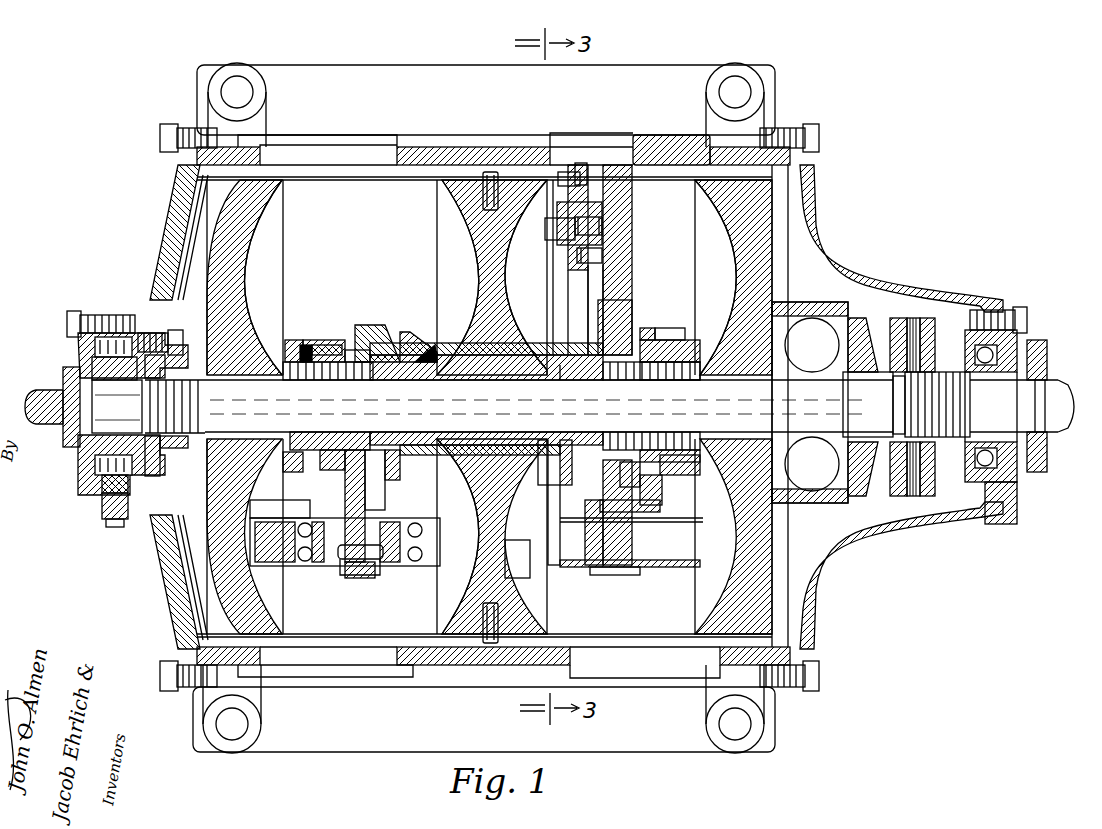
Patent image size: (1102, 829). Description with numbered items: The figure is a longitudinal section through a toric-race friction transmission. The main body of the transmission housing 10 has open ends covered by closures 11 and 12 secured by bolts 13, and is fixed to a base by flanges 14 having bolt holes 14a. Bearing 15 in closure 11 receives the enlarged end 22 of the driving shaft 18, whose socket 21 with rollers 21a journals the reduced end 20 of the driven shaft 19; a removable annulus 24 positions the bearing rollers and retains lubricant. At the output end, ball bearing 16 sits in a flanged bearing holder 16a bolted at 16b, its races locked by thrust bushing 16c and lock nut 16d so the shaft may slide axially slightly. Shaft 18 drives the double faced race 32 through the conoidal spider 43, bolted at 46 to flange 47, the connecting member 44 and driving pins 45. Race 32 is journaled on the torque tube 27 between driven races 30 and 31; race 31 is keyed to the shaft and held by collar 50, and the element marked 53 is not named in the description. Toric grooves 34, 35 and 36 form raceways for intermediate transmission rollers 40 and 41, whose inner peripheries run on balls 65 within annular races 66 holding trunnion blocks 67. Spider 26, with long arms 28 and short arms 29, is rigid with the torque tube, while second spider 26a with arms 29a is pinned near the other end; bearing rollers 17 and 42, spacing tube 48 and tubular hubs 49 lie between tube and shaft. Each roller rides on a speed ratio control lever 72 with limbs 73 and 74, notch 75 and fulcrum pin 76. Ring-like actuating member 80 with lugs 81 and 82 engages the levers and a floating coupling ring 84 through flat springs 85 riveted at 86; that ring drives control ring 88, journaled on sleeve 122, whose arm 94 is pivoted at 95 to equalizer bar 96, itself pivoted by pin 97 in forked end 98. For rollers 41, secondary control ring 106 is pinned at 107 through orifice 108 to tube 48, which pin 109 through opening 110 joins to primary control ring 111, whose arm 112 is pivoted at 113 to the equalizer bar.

The main body of transmission housing 10 is at (466, 147).
The closure 11 is at (162, 232).
The closure 12 is at (868, 278).
The bolts 13 is at (162, 151).
The flanges 14 is at (384, 77).
The bolt holes 14a is at (243, 92).
The bearing 15 is at (110, 345).
The bearing 16 is at (1012, 352).
The flanged bearing holder 16a is at (1020, 492).
The bolt 16b is at (1000, 314).
The thrust bushing 16c is at (1020, 366).
The lock nut 16d is at (1045, 455).
The bearing rollers 17 is at (618, 381).
The driving shaft 18 is at (50, 388).
The driven shaft 19 is at (1060, 426).
The reduced end 20 is at (105, 438).
The socket 21 is at (66, 445).
The rollers 21a is at (105, 372).
The enlarged end 22 is at (103, 480).
The removable annulus 24 is at (104, 504).
The transverse support 26 is at (631, 341).
The second spider 26a is at (378, 323).
The torque tube 27 is at (420, 349).
The long arms 28 is at (596, 206).
The short radiating arms 29 is at (612, 495).
The short radiating arms 29a is at (366, 500).
The race 30 is at (740, 206).
The race 31 is at (242, 206).
The double faced race 32 is at (446, 188).
The toric groove 34 is at (510, 290).
The toric groove 35 is at (256, 236).
The toric groove 36 is at (468, 224).
The intermediate transmission rollers 40 is at (700, 560).
The intermediate transmission rollers 41 is at (462, 560).
The bearing rollers 42 is at (306, 343).
The conoidal flange or spider 43 is at (172, 283).
The rigid connecting member 44 is at (372, 178).
The driving pins 45 is at (484, 186).
The bolts 46 is at (177, 335).
The flange 47 is at (148, 332).
The spacing tube 48 is at (500, 365).
The tubular hubs 49 is at (674, 381).
The collar 50 is at (188, 448).
The cylinder block 53 is at (722, 257).
The balls 65 is at (306, 561).
The annular race 66 is at (322, 556).
The trunnion blocks 67 is at (406, 560).
The speed ratio control lever 72 is at (362, 572).
The limb 73 is at (382, 511).
The limb 74 is at (342, 509).
The notch 75 is at (345, 493).
The pin 76 is at (376, 566).
The ring-like actuating member 80 is at (345, 343).
The lugs 81 is at (322, 464).
The lugs 82 is at (330, 340).
The floating coupling ring 84 is at (292, 345).
The flat springs 85 is at (316, 339).
The rivet 86 is at (297, 376).
The control ring 88 is at (626, 320).
The arm 94 is at (596, 276).
The pivot 95 is at (596, 252).
The equalizer bar 96 is at (586, 194).
The pin 97 is at (600, 228).
The forked end 98 is at (560, 219).
The secondary control ring 106 is at (405, 330).
The pins 107 is at (402, 463).
The orifice 108 is at (437, 470).
The pin 109 is at (566, 466).
The opening 110 is at (545, 466).
The primary control ring 111 is at (590, 491).
The arm 112 is at (576, 301).
The pivot 113 is at (560, 180).
The sleeve 122 is at (560, 366).